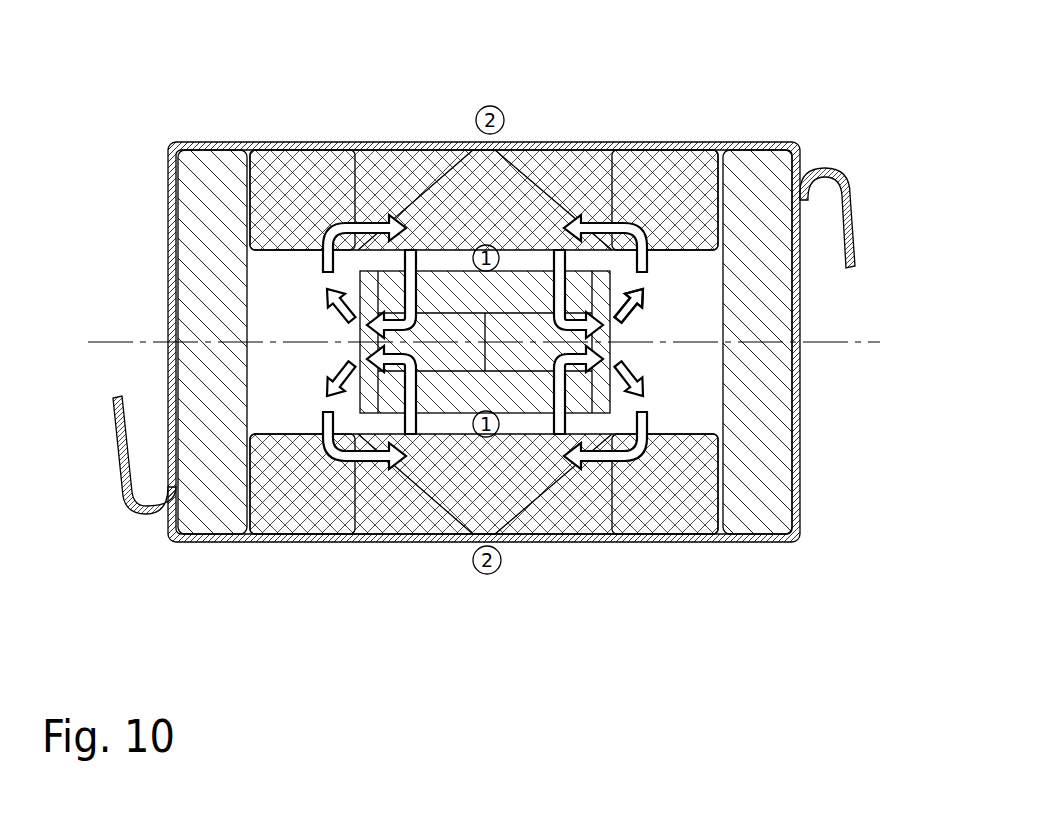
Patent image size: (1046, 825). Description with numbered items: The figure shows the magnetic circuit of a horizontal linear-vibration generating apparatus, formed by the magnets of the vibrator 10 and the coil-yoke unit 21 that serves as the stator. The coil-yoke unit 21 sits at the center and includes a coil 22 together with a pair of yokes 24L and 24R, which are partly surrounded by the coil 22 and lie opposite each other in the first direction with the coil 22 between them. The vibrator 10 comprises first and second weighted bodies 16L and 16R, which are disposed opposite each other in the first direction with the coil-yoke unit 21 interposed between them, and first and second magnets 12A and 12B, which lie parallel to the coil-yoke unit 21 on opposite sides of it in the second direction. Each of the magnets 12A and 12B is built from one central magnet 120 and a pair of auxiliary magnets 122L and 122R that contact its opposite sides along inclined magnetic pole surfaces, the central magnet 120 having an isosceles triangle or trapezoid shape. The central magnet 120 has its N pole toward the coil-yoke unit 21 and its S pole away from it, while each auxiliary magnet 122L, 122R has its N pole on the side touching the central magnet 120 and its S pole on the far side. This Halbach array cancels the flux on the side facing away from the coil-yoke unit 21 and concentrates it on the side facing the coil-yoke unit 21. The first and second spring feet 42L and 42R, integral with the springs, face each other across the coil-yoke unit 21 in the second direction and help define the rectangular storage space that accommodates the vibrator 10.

The vibrator 10 is at (821, 378).
The first magnet 12A is at (655, 63).
The second magnet 12B is at (655, 617).
The central magnet 120 is at (448, 150).
The auxiliary magnet 122L is at (322, 150).
The auxiliary magnet 122R is at (648, 150).
The first weighted body 16L is at (205, 297).
The second weighted body 16R is at (765, 455).
The coil-yoke unit 21 is at (641, 313).
The coil 22 is at (521, 400).
The yoke 24L is at (345, 368).
The yoke 24R is at (627, 372).
The first spring foot 42L is at (208, 143).
The second spring foot 42R is at (760, 542).